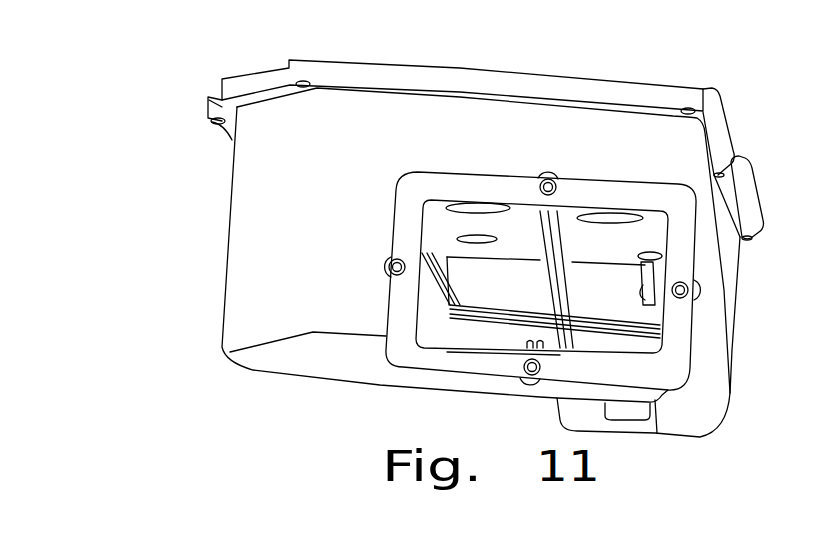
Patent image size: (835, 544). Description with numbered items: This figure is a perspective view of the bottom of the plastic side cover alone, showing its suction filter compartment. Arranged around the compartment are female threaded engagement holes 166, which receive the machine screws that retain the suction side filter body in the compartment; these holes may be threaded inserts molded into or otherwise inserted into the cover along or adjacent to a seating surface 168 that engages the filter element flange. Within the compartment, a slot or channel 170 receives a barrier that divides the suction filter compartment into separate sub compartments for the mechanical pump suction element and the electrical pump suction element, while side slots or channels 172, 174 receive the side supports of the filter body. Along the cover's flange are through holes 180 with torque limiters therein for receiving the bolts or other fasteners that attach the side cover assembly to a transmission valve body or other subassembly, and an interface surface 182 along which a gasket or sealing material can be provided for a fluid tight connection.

The female threaded engagement holes 166 is at (549, 178).
The seating surface 168 is at (417, 185).
The slot or channel 170 is at (555, 210).
The side slot or channel 172 is at (428, 285).
The side slot or channel 174 is at (645, 293).
The flange through holes 180 is at (698, 95).
The interface surface 182 is at (251, 72).